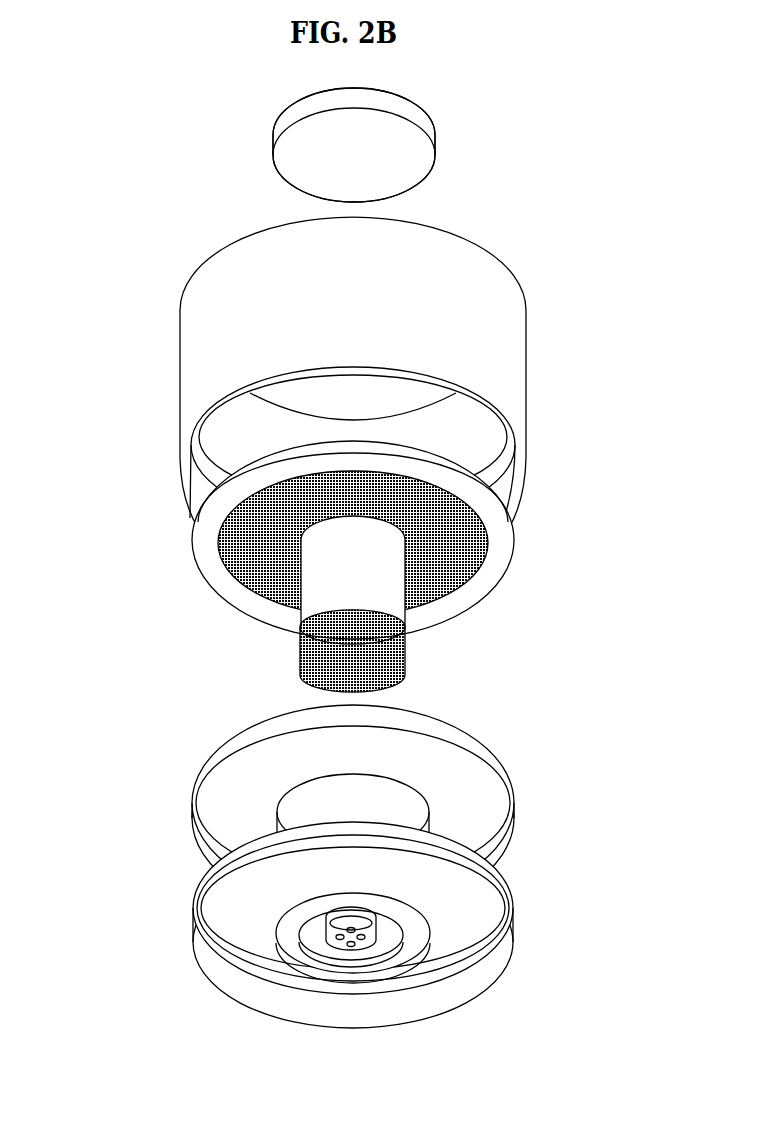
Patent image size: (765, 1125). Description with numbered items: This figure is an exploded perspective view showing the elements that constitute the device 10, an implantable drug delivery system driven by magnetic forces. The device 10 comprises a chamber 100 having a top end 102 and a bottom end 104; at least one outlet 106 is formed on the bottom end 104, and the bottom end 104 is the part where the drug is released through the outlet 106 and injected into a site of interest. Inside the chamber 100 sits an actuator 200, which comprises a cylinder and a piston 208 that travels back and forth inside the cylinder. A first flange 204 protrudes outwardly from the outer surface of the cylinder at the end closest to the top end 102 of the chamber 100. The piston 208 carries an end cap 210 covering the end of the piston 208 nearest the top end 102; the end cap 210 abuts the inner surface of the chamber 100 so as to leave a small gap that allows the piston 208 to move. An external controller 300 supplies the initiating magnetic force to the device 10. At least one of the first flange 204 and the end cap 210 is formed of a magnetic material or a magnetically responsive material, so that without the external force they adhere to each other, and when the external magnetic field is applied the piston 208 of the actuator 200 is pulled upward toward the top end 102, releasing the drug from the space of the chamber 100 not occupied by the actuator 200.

The device 10 is at (553, 266).
The chamber 100 is at (516, 338).
The top end of the chamber 102 is at (425, 399).
The bottom end of the chamber 104 is at (433, 992).
The outlet 106 is at (352, 947).
The actuator 200 is at (152, 513).
The first flange 204 is at (250, 731).
The piston 208 is at (312, 606).
The end cap 210 is at (207, 522).
The external controller 300 is at (423, 136).